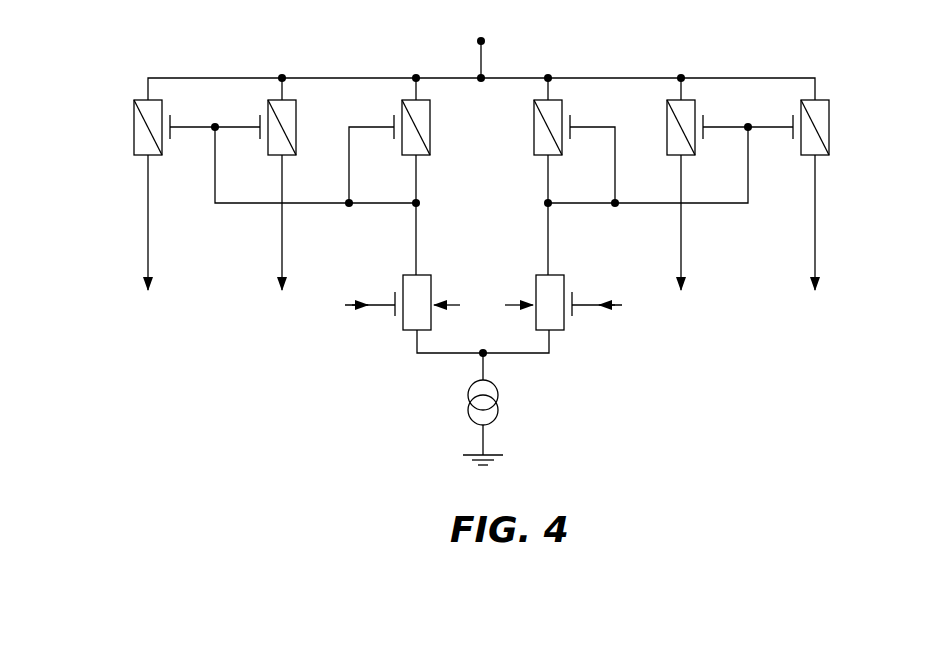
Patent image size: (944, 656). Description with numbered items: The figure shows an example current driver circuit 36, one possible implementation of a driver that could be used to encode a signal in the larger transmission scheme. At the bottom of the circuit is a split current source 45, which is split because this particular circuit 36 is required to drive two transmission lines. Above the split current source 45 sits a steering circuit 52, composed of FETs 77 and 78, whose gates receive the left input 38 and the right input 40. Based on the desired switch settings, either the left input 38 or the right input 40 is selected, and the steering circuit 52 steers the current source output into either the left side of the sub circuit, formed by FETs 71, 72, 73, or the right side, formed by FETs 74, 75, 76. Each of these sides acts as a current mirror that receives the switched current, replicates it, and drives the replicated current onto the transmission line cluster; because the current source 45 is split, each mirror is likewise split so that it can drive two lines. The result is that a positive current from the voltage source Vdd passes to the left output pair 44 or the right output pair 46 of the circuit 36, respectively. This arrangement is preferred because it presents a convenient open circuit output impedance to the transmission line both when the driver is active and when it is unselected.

The current driver circuit 36 is at (101, 50).
The left input 38 is at (369, 322).
The right input 40 is at (596, 320).
The left output pair 44 is at (283, 218).
The split current source 45 is at (496, 403).
The right output pair 46 is at (815, 217).
The steering circuit 52 is at (483, 305).
The FET 71 is at (155, 108).
The FET 72 is at (288, 108).
The FET 73 is at (422, 108).
The FET 74 is at (555, 108).
The FET 75 is at (688, 108).
The FET 76 is at (822, 105).
The FET 77 is at (422, 288).
The FET 78 is at (557, 288).